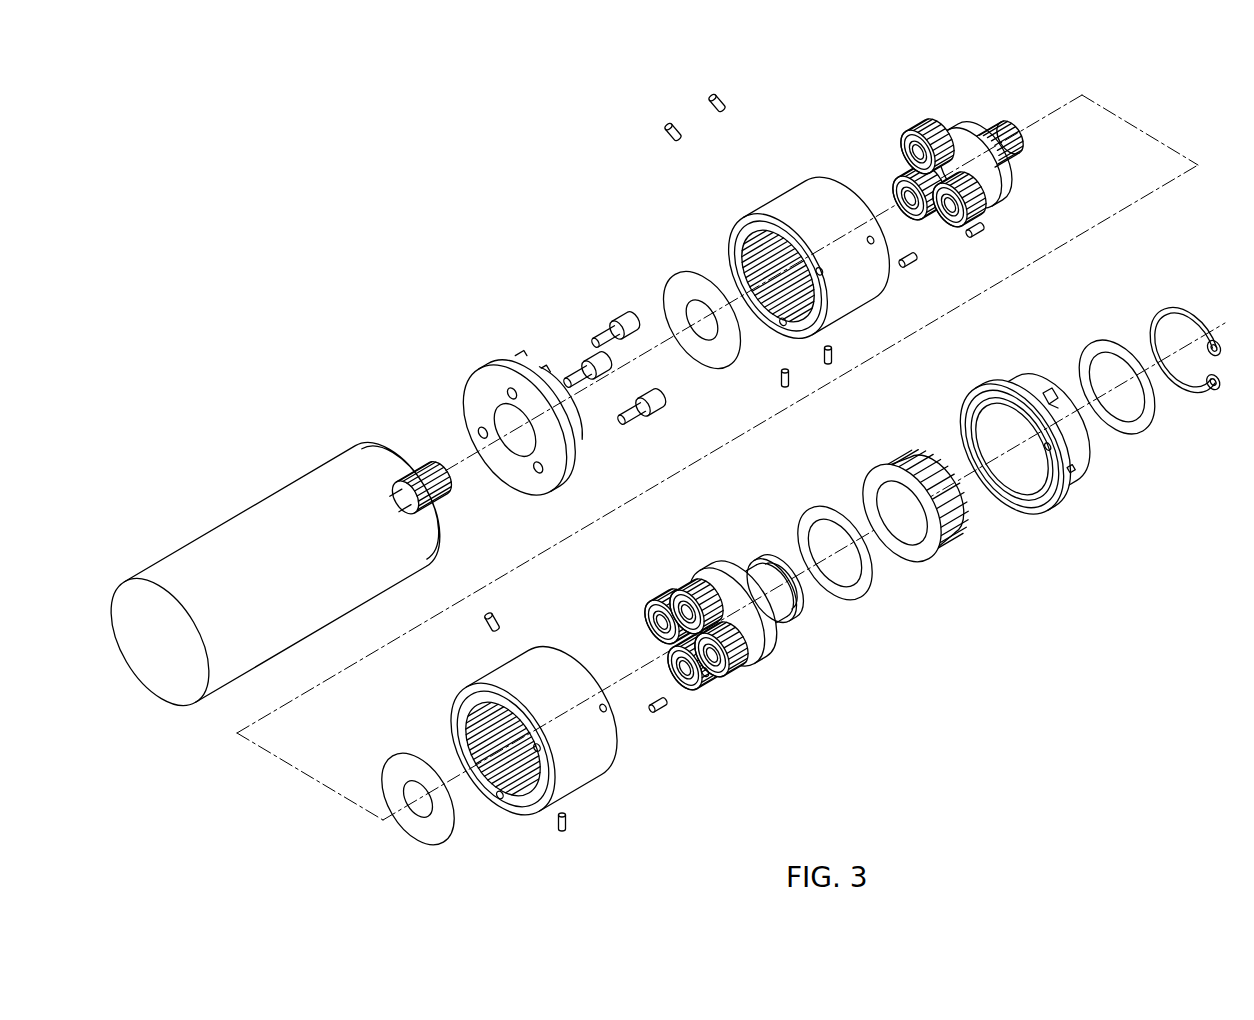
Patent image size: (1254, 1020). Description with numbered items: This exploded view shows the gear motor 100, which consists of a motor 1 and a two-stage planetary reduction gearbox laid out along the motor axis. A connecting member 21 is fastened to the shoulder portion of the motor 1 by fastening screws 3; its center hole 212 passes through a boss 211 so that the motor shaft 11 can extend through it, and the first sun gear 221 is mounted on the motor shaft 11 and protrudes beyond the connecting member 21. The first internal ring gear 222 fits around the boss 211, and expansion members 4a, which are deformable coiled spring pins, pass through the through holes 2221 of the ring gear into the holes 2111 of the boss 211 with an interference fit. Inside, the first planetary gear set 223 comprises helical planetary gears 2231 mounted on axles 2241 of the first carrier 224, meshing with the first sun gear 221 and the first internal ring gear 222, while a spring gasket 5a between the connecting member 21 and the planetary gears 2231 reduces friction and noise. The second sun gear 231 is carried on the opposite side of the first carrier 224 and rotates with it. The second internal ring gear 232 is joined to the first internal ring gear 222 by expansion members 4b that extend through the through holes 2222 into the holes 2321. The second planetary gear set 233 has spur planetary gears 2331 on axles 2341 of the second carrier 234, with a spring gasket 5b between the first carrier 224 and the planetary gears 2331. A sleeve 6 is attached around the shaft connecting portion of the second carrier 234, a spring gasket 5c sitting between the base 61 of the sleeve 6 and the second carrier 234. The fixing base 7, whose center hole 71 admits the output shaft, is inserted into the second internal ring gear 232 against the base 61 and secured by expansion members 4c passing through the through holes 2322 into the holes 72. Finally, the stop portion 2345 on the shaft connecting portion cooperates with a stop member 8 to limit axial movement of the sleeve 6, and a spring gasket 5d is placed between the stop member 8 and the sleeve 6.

The gear motor 100 is at (503, 108).
The motor 1 is at (187, 580).
The motor shaft 11 is at (427, 468).
The first sun gear 221 is at (427, 457).
The connecting member 21 is at (541, 392).
The boss 211 is at (567, 397).
The center hole 212 is at (508, 417).
The holes 2111 is at (583, 412).
The fastening screws 3 is at (612, 310).
The expansion members 4a is at (668, 132).
The expansion members 4b is at (710, 96).
The expansion members 4c is at (665, 707).
The spring gasket 5a is at (678, 292).
The spring gasket 5b is at (396, 772).
The spring gasket 5c is at (847, 590).
The spring gasket 5d is at (1140, 423).
The first internal ring gear 222 is at (793, 238).
The through holes 2221 is at (793, 205).
The through holes 2222 is at (850, 220).
The first planetary gear set 223 is at (902, 146).
The planetary gears 2231 is at (933, 122).
The second sun gear 231 is at (1000, 128).
The first carrier 224 is at (995, 182).
The axles 2241 is at (943, 225).
The second internal ring gear 232 is at (560, 731).
The holes 2321 is at (540, 750).
The through holes 2322 is at (610, 712).
The second planetary gear set 233 is at (649, 626).
The planetary gears 2331 is at (660, 594).
The second carrier 234 is at (758, 627).
The axles 2341 is at (715, 677).
The stop portion 2345 is at (765, 552).
The sleeve 6 is at (887, 523).
The base 61 is at (872, 483).
The fixing base 7 is at (1039, 470).
The center hole 71 is at (998, 503).
The holes 72 is at (1073, 445).
The stop member 8 is at (1158, 318).